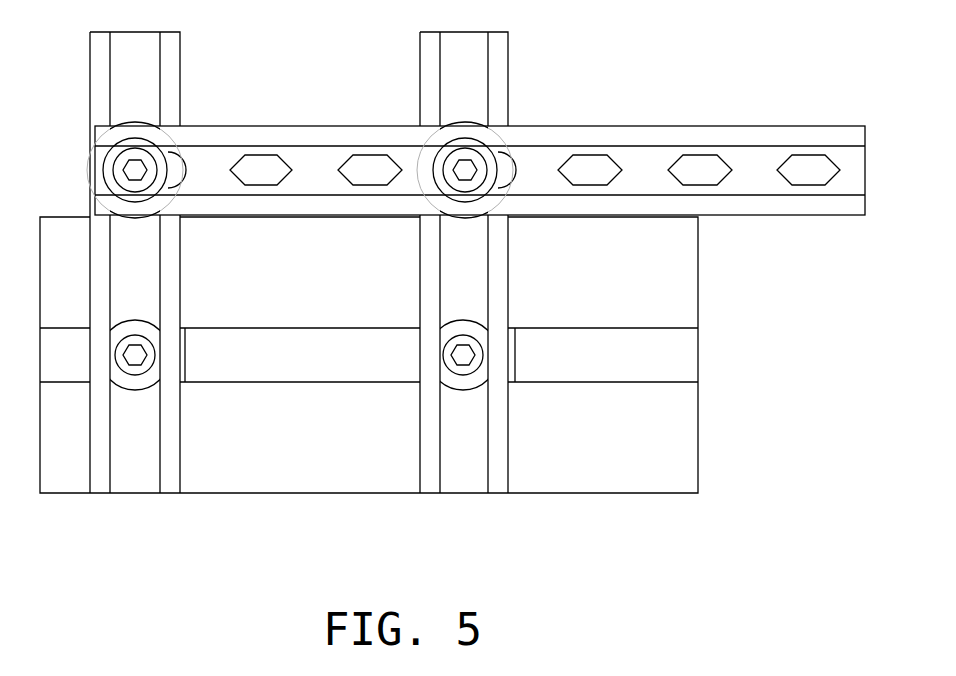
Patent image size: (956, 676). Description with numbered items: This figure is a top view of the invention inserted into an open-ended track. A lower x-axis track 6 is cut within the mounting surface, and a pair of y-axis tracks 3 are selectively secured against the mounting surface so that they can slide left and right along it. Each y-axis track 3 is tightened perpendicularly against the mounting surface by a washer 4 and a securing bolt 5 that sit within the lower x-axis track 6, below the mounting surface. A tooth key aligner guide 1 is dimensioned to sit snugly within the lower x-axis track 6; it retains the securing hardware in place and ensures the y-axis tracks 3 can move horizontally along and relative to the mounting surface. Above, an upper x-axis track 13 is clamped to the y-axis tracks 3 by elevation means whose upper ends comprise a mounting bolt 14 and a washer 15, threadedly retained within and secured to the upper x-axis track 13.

The tooth key aligner guide 1 is at (182, 360).
The y-axis track 3 is at (137, 450).
The washer 4 is at (118, 380).
The securing bolt 5 is at (142, 370).
The lower x-axis track 6 is at (682, 356).
The upper x-axis track 13 is at (597, 133).
The mounting bolt 14 is at (145, 165).
The washer 15 is at (112, 163).